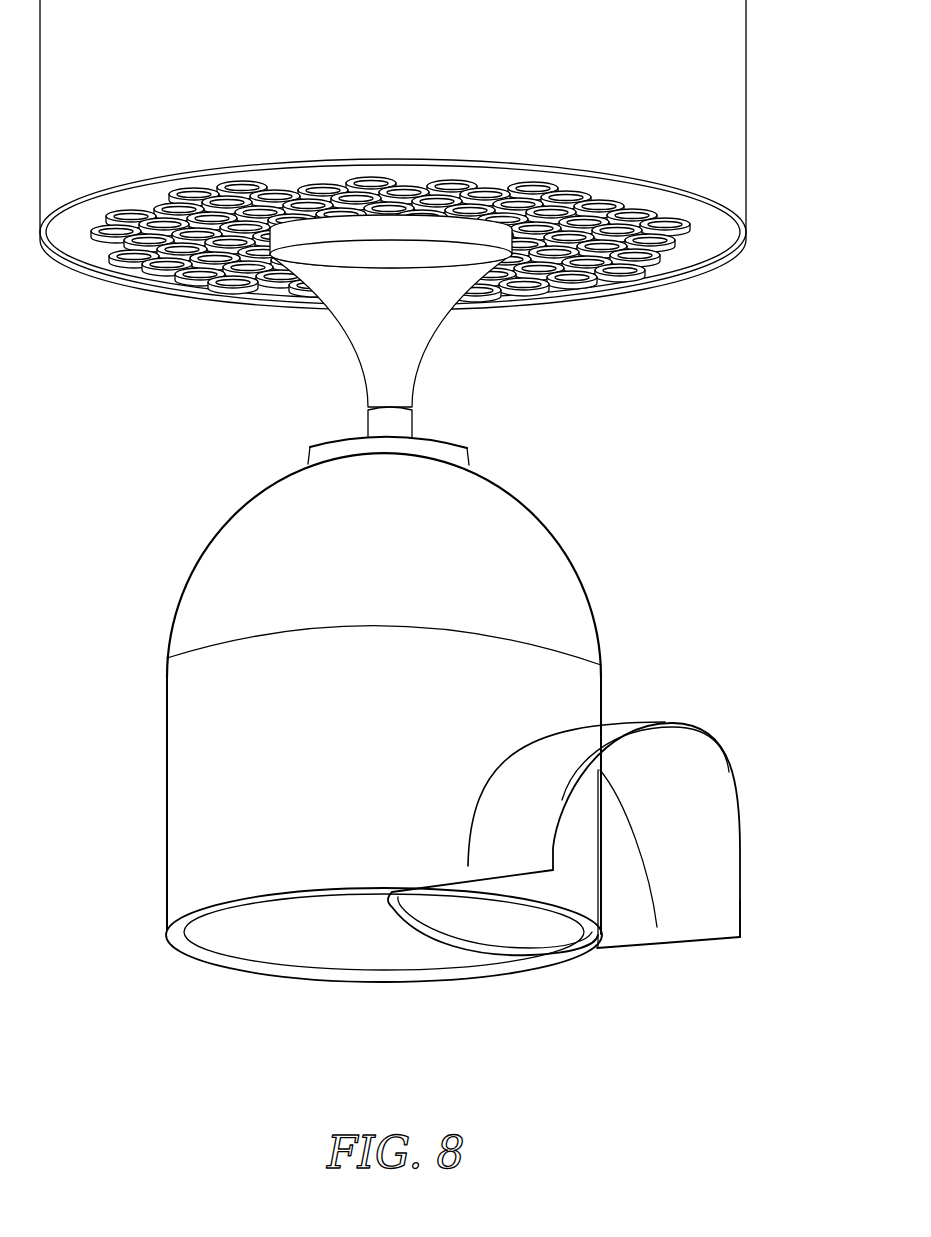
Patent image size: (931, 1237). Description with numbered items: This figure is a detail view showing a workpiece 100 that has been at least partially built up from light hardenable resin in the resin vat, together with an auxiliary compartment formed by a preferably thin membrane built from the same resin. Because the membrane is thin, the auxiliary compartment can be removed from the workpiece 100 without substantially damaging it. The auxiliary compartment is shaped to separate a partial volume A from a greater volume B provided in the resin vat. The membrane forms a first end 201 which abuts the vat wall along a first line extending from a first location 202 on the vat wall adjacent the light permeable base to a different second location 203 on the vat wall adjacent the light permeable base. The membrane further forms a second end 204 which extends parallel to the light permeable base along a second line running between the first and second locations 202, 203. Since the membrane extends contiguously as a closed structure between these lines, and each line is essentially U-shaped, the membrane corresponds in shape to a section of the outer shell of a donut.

The workpiece 100 is at (215, 767).
The first end 201 is at (685, 723).
The first location 202 is at (740, 937).
The second location 203 is at (548, 866).
The second end 204 is at (533, 873).
The partial volume A is at (623, 878).
The greater volume B is at (125, 895).